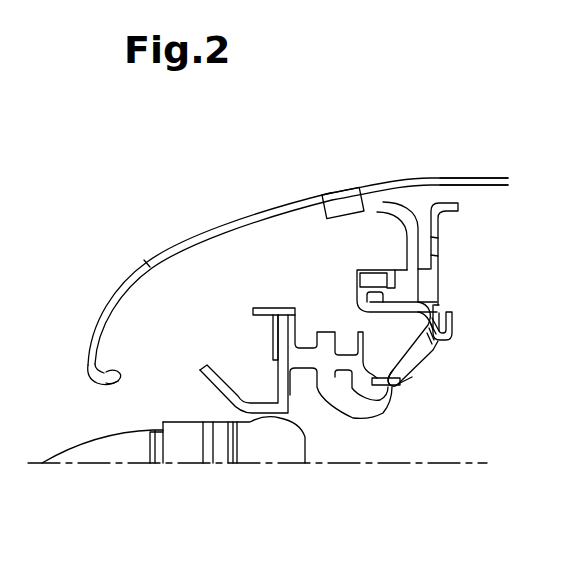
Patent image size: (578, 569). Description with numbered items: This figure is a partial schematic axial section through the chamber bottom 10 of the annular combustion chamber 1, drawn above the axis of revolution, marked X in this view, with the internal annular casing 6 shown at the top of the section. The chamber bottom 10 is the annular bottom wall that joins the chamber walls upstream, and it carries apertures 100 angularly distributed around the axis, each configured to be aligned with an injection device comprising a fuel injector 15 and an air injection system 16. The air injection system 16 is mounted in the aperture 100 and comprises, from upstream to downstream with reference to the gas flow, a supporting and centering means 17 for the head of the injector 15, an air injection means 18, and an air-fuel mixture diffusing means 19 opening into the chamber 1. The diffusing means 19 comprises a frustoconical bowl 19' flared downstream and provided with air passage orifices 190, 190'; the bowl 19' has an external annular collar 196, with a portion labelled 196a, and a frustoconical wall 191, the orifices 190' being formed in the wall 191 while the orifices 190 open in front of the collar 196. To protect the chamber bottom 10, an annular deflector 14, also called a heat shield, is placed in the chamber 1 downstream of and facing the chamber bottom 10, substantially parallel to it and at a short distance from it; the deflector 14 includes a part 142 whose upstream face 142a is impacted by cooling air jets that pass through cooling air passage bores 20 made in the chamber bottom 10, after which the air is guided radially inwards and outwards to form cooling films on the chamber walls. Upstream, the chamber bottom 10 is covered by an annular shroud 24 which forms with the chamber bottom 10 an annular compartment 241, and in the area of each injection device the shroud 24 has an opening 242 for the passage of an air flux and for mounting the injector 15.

The combustion chamber 1 is at (453, 453).
The internal annular casing 6 is at (452, 183).
The chamber bottom 10 is at (398, 212).
The annular deflector 14 is at (447, 228).
The panel edge 142 is at (433, 239).
The upstream face 142a is at (431, 257).
The fuel injector 15 is at (185, 448).
The air injection system 16 is at (283, 473).
The supporting and centering means 17 is at (277, 338).
The air injection means 18 is at (363, 416).
The air-fuel mixture diffusing means 19 is at (421, 439).
The frustoconical bowl 19' is at (546, 359).
The air passage orifices 190 is at (455, 353).
The air passage orifices 190' is at (476, 343).
The frustoconical wall 191 is at (412, 377).
The external annular collar 196 is at (453, 317).
The clip arm 196a is at (438, 306).
The cooling air passage bores 20 is at (407, 253).
The annular shroud 24 is at (107, 304).
The annular compartment 241 is at (188, 331).
The opening 242 is at (118, 386).
The apertures 100 is at (393, 433).
The axis X is at (467, 467).